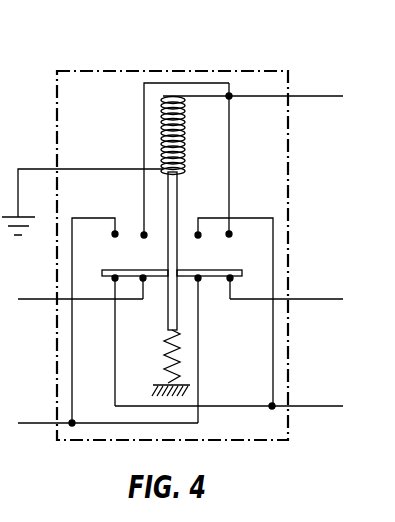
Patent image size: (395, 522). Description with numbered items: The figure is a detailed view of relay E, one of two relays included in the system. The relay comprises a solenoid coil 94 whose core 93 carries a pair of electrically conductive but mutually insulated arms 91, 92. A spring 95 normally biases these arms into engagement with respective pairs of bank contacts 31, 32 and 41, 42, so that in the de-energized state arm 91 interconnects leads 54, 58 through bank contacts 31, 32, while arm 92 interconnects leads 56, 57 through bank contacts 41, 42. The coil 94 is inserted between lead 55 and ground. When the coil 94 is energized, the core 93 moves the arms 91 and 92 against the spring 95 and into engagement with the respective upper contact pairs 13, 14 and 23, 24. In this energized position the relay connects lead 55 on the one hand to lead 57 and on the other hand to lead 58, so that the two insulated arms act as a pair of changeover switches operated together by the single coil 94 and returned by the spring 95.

The relay E is at (79, 68).
The solenoid coil 94 is at (185, 104).
The core 93 is at (177, 186).
The arm 92 is at (112, 269).
The arm 91 is at (239, 258).
The contact 24 is at (112, 234).
The contact 23 is at (144, 238).
The contact 13 is at (232, 234).
The contact 14 is at (230, 312).
The bank contact 42 is at (112, 279).
The bank contact 41 is at (144, 282).
The bank contact 32 is at (200, 282).
The bank contact 31 is at (232, 280).
The lead 55 is at (324, 95).
The lead 54 is at (325, 298).
The lead 57 is at (326, 405).
The lead 56 is at (30, 300).
The lead 58 is at (38, 422).
The spring 95 is at (166, 370).